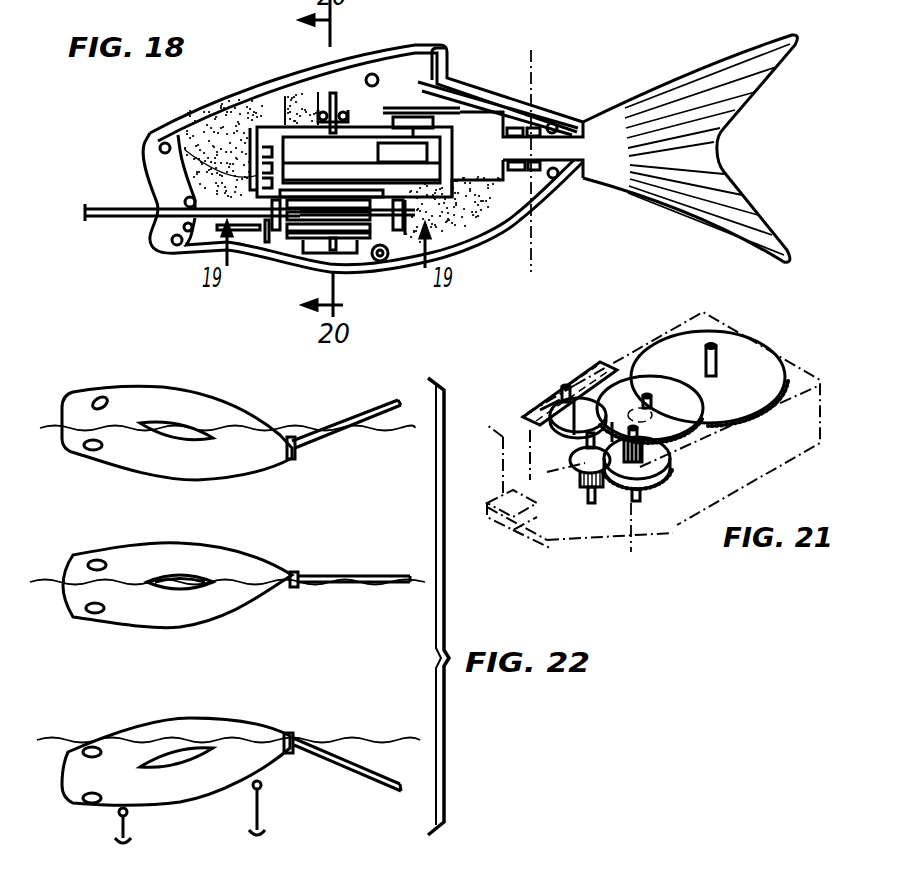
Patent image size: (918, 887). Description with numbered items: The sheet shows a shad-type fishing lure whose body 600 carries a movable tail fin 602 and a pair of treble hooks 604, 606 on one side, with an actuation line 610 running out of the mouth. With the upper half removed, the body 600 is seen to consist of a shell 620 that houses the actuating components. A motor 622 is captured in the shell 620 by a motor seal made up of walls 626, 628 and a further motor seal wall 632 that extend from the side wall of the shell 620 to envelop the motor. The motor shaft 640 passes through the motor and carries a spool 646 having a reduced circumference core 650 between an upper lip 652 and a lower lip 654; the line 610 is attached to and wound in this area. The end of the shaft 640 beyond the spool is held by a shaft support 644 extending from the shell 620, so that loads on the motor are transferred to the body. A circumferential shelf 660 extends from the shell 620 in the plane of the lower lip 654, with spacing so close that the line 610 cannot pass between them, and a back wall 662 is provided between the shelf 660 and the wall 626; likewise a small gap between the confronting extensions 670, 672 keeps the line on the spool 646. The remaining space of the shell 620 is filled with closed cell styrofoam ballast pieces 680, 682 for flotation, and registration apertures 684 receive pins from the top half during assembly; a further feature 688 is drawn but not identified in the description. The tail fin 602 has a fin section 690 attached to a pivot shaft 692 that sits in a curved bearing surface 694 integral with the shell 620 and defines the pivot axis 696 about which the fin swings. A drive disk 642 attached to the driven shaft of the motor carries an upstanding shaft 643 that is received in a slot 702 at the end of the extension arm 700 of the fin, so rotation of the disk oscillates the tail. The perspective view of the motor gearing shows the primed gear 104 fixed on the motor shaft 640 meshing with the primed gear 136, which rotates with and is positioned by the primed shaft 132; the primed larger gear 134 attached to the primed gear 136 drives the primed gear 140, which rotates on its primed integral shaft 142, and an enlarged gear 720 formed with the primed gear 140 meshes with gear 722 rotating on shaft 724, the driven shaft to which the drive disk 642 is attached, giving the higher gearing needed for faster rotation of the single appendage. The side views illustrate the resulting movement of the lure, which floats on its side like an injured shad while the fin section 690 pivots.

In FIG. 18, the tail fin 602 is at (780, 88).
In FIG. 22, the body 600 is at (263, 460).
In FIG. 22, the treble hook 604 is at (117, 828).
In FIG. 22, the treble hook 606 is at (263, 817).
In FIG. 18, the actuation line 610 is at (90, 219).
In FIG. 18, the shell 620 is at (497, 233).
In FIG. 18, the motor 622 is at (372, 150).
In FIG. 21, the motor 622 is at (822, 414).
In FIG. 18, the wall 626 is at (465, 235).
In FIG. 18, the wall 628 is at (298, 94).
In FIG. 18, the motor seal wall 632 is at (252, 110).
In FIG. 18, the motor shaft 640 is at (335, 94).
In FIG. 21, the motor shaft 640 is at (716, 352).
In FIG. 18, the drive disk 642 is at (438, 47).
In FIG. 21, the drive disk 642 is at (540, 412).
In FIG. 18, the upstanding shaft 643 is at (455, 92).
In FIG. 21, the upstanding shaft 643 is at (563, 394).
In FIG. 18, the shaft support 644 is at (334, 252).
In FIG. 18, the spool 646 is at (378, 264).
In FIG. 18, the core 650 is at (277, 232).
In FIG. 18, the upper lip 652 is at (262, 158).
In FIG. 18, the lower lip 654 is at (283, 239).
In FIG. 18, the circumferential shelf 660 is at (392, 262).
In FIG. 18, the back wall 662 is at (438, 238).
In FIG. 18, the extension 670 is at (258, 190).
In FIG. 18, the extension 672 is at (252, 236).
In FIG. 18, the ballast material piece 680 is at (477, 217).
In FIG. 18, the ballast material piece 682 is at (218, 124).
In FIG. 18, the registration apertures 684 is at (163, 143).
In FIG. 18, the tail section 688 is at (793, 5).
In FIG. 18, the fin section 690 is at (752, 108).
In FIG. 22, the fin section 690 is at (390, 403).
In FIG. 18, the pivot shaft 692 is at (548, 125).
In FIG. 18, the curved bearing surface 694 is at (546, 182).
In FIG. 18, the pivot axis 696 is at (531, 270).
In FIG. 18, the extension arm 700 is at (492, 112).
In FIG. 21, the extension arm 700 is at (506, 420).
In FIG. 21, the slot 702 is at (590, 368).
In FIG. 21, the enlarged gear 720 is at (657, 490).
In FIG. 21, the gear 722 is at (570, 490).
In FIG. 21, the shaft 724 is at (582, 503).
In FIG. 21, the gear 104 is at (770, 362).
In FIG. 21, the shaft 132 is at (636, 392).
In FIG. 21, the larger gear 134 is at (700, 406).
In FIG. 21, the gear 136 is at (704, 434).
In FIG. 21, the gear 140 is at (670, 480).
In FIG. 21, the integral shaft 142 is at (633, 552).